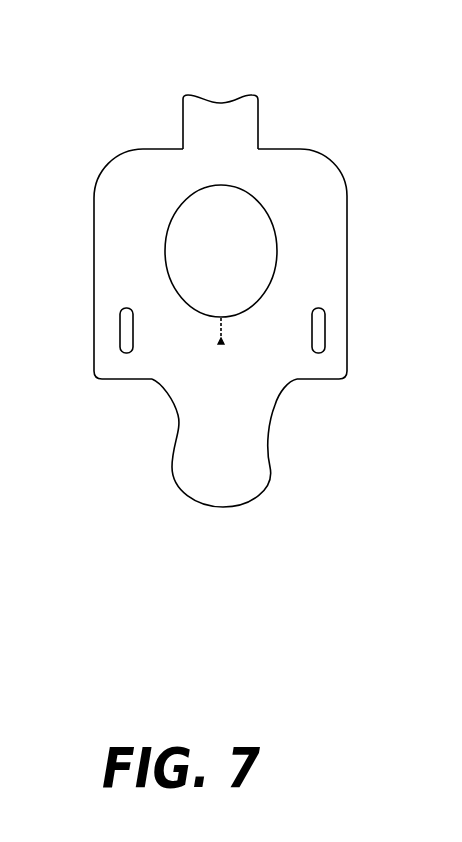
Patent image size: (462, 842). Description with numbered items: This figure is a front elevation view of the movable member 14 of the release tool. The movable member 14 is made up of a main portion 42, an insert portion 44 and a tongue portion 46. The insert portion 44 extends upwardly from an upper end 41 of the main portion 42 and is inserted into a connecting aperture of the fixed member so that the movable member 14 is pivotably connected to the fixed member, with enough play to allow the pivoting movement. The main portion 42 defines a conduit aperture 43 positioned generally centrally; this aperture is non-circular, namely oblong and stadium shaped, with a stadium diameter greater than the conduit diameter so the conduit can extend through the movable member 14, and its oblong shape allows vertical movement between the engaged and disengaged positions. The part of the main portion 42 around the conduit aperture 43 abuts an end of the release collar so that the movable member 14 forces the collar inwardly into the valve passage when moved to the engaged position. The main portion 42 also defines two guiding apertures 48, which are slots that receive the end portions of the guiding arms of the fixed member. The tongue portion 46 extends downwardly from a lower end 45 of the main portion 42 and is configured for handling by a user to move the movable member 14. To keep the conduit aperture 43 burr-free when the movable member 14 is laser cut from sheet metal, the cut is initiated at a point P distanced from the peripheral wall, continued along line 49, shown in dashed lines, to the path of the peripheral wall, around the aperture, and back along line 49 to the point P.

The movable member 14 is at (97, 139).
The upper end 41 is at (290, 149).
The main portion 42 is at (328, 263).
The conduit aperture 43 is at (270, 207).
The insert portion 44 is at (240, 120).
The lower end 45 is at (302, 380).
The tongue portion 46 is at (228, 452).
The guiding apertures 48 is at (325, 328).
The line 49 is at (219, 326).
The point P is at (218, 342).